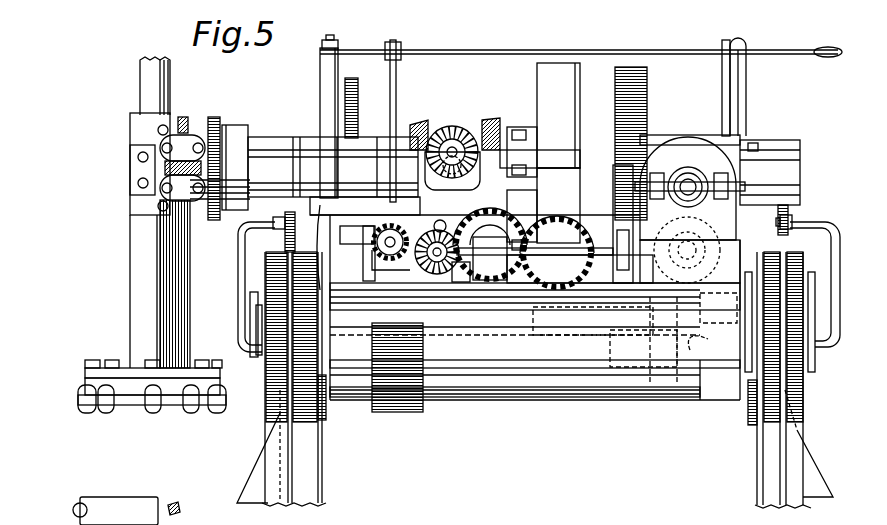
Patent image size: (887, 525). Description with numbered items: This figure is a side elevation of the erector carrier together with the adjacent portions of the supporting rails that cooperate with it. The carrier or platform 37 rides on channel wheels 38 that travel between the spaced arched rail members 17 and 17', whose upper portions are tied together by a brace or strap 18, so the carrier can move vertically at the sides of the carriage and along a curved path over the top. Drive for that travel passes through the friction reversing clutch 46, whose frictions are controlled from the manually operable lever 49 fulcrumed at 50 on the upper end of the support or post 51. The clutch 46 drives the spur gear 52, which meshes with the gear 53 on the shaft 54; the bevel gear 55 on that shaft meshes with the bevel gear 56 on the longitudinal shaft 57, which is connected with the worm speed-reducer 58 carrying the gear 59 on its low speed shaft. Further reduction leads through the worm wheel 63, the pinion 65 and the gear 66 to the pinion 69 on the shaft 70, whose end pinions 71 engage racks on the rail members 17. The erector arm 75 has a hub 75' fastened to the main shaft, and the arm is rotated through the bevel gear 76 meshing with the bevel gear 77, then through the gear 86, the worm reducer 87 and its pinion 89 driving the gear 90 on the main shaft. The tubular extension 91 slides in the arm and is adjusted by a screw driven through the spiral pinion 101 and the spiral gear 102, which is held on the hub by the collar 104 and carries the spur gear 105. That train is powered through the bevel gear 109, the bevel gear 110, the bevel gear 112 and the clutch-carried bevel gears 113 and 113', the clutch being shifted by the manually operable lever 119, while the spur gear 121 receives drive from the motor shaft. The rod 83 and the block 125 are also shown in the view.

The tubular extension 91 is at (140, 72).
The spiral pinion 101 is at (160, 167).
The spiral gear 102 is at (185, 117).
The spur gear 105 is at (215, 117).
The collar 104 is at (238, 130).
The hub 75' is at (333, 156).
The erector arm 75 is at (152, 306).
The manually operable lever 49 is at (534, 50).
The fulcrum 50 is at (337, 41).
The support or post 51 is at (320, 82).
The spur gear 121 is at (352, 78).
The bevel gear 77 is at (396, 102).
The bevel gear 113' is at (413, 125).
The bevel gear 109 is at (438, 130).
The bevel gear 110 is at (452, 140).
The bevel gear 112 is at (468, 133).
The bevel gear 113 is at (501, 122).
The worm reducer 87 is at (540, 120).
The rod 83 is at (722, 78).
The manually operable lever 119 is at (746, 92).
The gear 90 is at (645, 90).
The pinion 89 is at (640, 140).
The worm speed-reducer 58 is at (717, 188).
The gear 59 is at (676, 250).
The brace or strap 18 is at (802, 221).
The friction reversing clutch 46 is at (340, 236).
The spur gear 52 is at (390, 256).
The gear 53 is at (406, 236).
The shaft 54 is at (437, 262).
The bevel gear 55 is at (439, 221).
The bevel gear 56 is at (460, 272).
The pinion 65 is at (650, 302).
The shaft 57 is at (562, 265).
The gear 86 is at (618, 232).
The bevel gear 76 is at (522, 203).
The carrier or platform 37 is at (472, 330).
The gear 66 is at (660, 392).
The shaft 70 is at (530, 390).
The pinion 69 is at (397, 412).
The worm wheel 63 is at (690, 340).
The rail member 17 is at (794, 380).
The rail member 17' is at (277, 379).
The channel wheels 38 is at (262, 364).
The pinions 71 is at (322, 414).
The block 125 is at (108, 508).